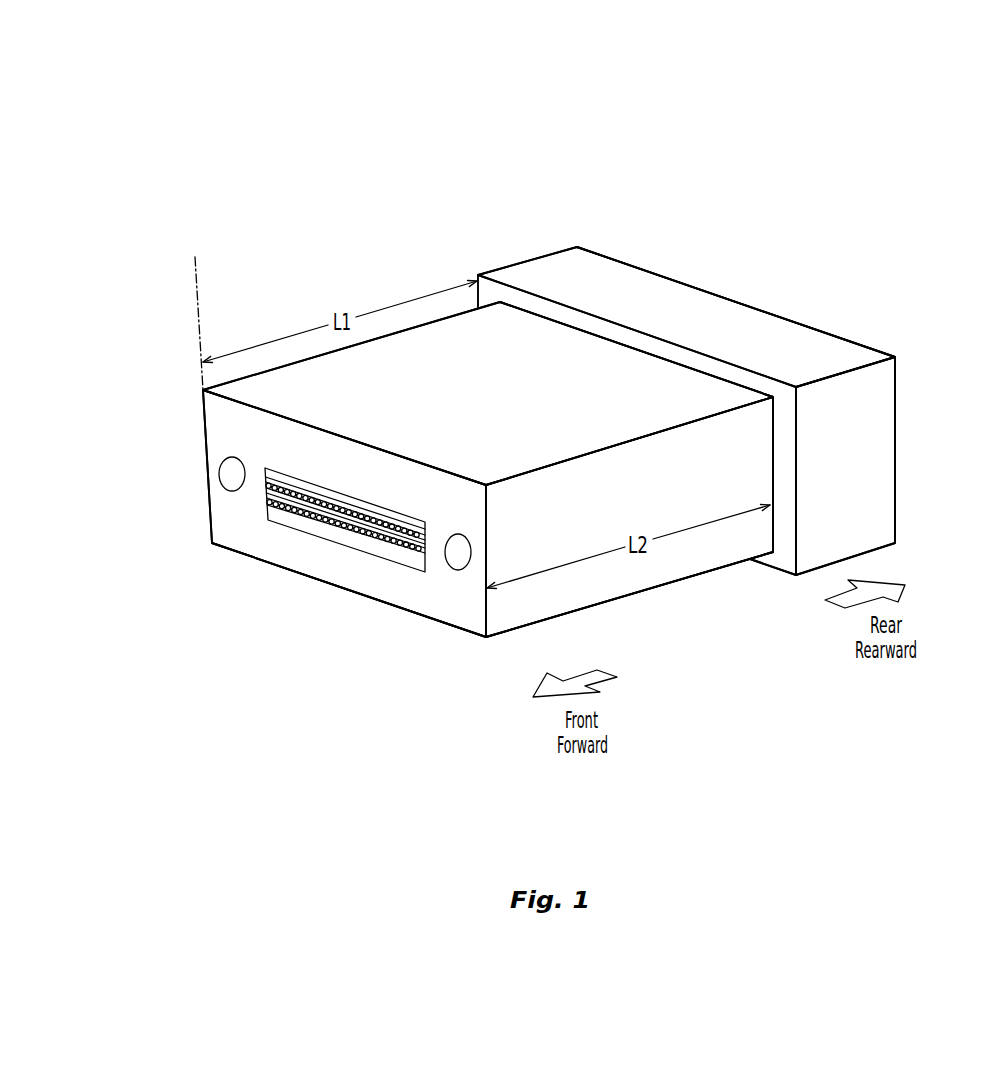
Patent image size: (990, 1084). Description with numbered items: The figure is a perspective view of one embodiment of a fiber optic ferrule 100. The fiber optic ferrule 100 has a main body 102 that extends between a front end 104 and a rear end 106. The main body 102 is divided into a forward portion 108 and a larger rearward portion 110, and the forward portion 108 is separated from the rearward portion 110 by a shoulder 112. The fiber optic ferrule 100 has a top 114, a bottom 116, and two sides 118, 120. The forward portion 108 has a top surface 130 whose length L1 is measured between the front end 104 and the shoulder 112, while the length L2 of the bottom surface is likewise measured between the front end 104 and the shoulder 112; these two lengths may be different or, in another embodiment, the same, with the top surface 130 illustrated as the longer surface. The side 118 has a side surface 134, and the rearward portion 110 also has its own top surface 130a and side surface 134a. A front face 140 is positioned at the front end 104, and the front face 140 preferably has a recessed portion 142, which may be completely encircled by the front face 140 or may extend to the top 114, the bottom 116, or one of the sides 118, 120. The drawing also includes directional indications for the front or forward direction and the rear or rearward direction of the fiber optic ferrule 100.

The fiber optic ferrule 100 is at (752, 163).
The main body 102 is at (393, 352).
The front end 104 is at (445, 623).
The rear end 106 is at (910, 392).
The forward portion 108 is at (677, 585).
The rearward portion 110 is at (795, 337).
The shoulder 112 is at (782, 543).
The top 114 is at (516, 380).
The bottom 116 is at (397, 610).
The side 118 is at (629, 496).
The side 120 is at (185, 424).
The top surface 130 is at (544, 440).
The top surface 130a is at (692, 305).
The side surface 134 is at (543, 512).
The side surface 134a is at (886, 478).
The front face 140 is at (227, 513).
The recessed portion 142 is at (312, 535).